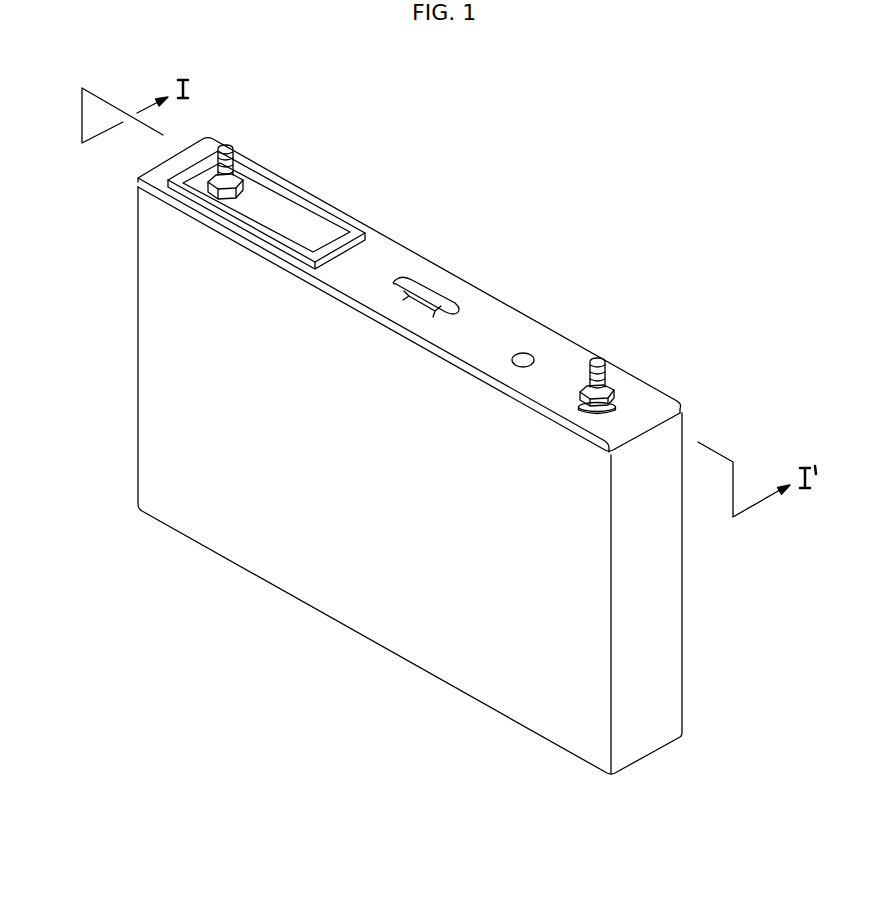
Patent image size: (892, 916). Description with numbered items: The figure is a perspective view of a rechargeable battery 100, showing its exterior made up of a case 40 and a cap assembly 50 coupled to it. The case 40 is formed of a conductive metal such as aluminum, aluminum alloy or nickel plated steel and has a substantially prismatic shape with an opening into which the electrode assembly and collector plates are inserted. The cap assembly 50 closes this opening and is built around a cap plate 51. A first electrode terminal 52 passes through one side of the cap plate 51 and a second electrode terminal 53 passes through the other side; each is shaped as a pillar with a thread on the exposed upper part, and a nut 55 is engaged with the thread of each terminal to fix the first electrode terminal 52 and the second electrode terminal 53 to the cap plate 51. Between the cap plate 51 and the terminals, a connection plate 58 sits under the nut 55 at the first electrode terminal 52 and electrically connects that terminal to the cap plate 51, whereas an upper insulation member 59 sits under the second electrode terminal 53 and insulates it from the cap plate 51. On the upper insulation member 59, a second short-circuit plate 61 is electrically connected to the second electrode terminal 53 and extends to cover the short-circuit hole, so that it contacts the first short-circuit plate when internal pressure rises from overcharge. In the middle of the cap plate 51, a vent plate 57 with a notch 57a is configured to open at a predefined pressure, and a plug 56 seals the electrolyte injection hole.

The rechargeable battery 100 is at (457, 117).
The case 40 is at (353, 613).
The cap assembly 50 is at (512, 297).
The cap plate 51 is at (393, 267).
The first electrode terminal 52 is at (598, 355).
The second electrode terminal 53 is at (225, 145).
The nut 55 is at (210, 193).
The plug 56 is at (527, 354).
The vent plate 57 is at (423, 288).
The notch 57a is at (433, 297).
The connection plate 58 is at (615, 400).
The upper insulation member 59 is at (300, 197).
The second short-circuit plate 61 is at (257, 200).